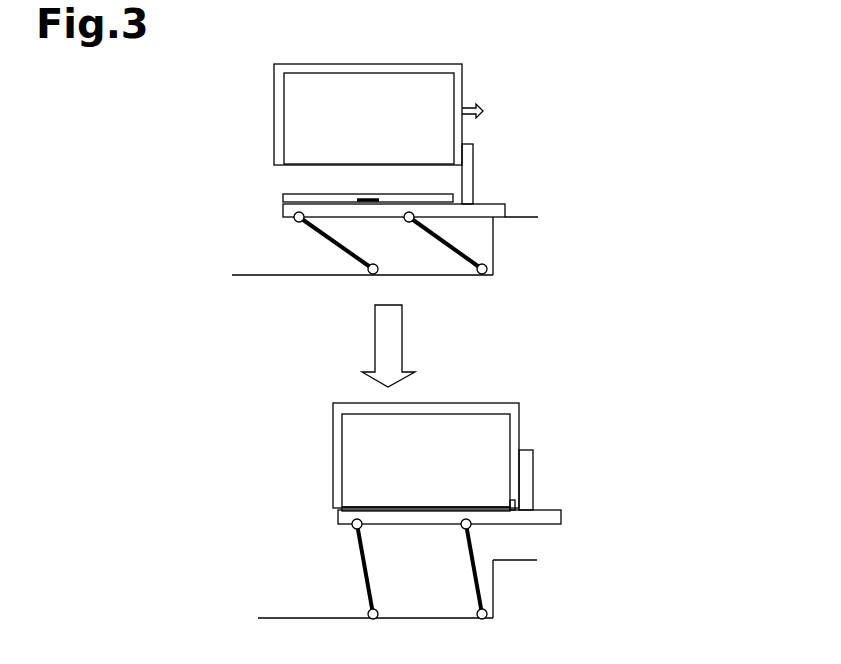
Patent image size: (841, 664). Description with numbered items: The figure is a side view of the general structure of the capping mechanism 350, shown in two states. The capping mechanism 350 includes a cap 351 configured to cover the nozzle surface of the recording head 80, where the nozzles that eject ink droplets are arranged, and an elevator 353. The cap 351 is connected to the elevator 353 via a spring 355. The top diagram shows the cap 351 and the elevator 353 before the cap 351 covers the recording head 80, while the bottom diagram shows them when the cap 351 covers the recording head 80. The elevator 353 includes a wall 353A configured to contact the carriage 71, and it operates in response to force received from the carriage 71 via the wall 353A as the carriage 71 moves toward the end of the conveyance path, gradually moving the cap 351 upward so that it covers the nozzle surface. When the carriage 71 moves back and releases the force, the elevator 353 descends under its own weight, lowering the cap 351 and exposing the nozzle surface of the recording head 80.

The carriage 71 is at (428, 64).
The recording head 80 is at (368, 73).
The capping mechanism 350 is at (552, 126).
The cap 351 is at (283, 197).
The elevator 353 is at (283, 273).
The wall 353A is at (474, 175).
The spring 355 is at (360, 199).